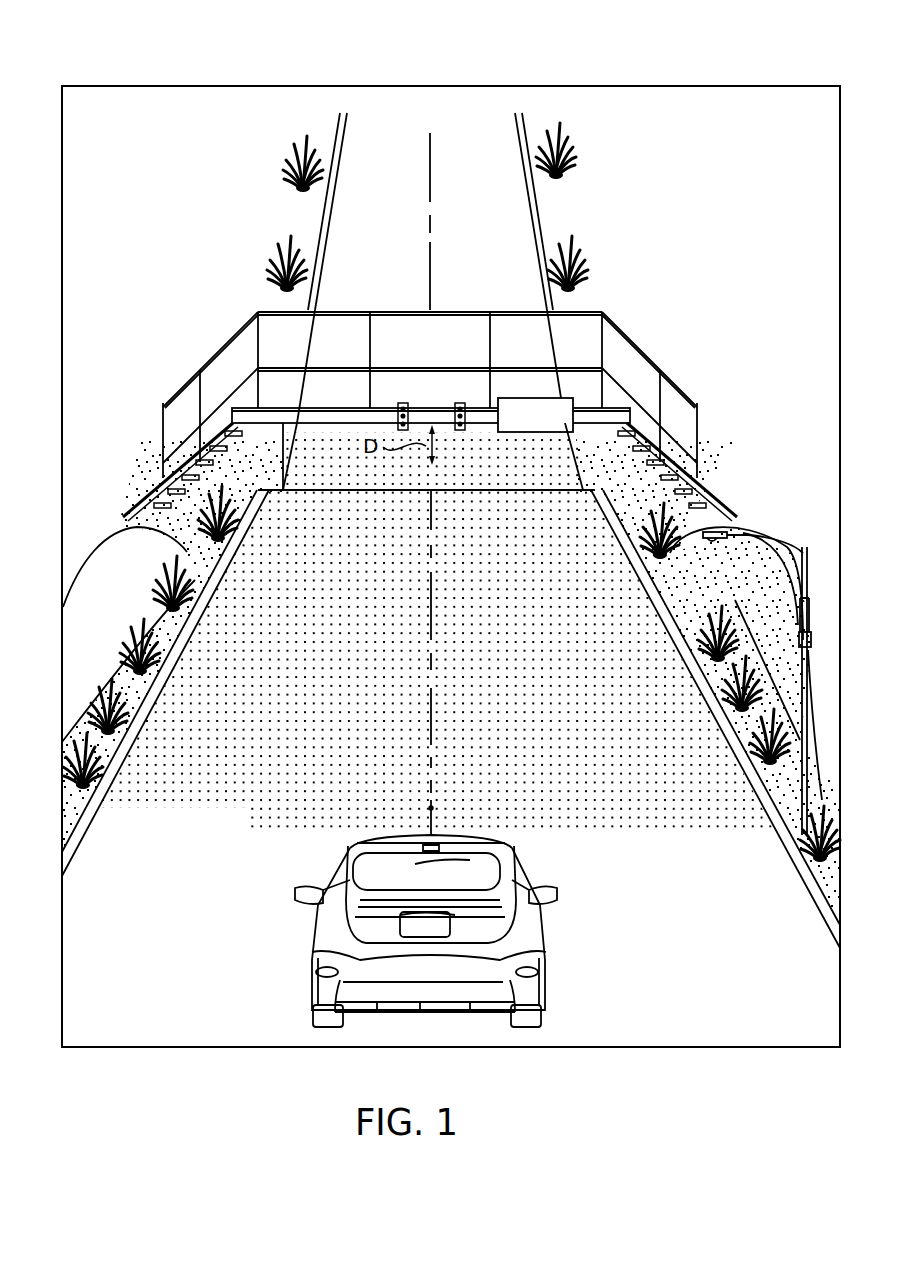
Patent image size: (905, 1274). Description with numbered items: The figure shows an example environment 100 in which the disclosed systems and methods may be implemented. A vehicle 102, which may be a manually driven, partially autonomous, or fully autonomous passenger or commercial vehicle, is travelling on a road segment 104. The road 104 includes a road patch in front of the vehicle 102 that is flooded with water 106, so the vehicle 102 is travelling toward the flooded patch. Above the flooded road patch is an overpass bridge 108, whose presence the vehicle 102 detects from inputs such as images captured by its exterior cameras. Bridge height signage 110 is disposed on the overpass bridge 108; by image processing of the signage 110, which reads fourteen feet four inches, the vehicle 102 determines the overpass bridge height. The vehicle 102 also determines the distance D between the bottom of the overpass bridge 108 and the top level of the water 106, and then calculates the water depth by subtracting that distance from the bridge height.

The environment 100 is at (122, 58).
The vehicle 102 is at (545, 935).
The road segment 104 is at (125, 853).
The water 106 is at (623, 632).
The overpass bridge 108 is at (350, 310).
The bridge height signage 110 is at (537, 398).